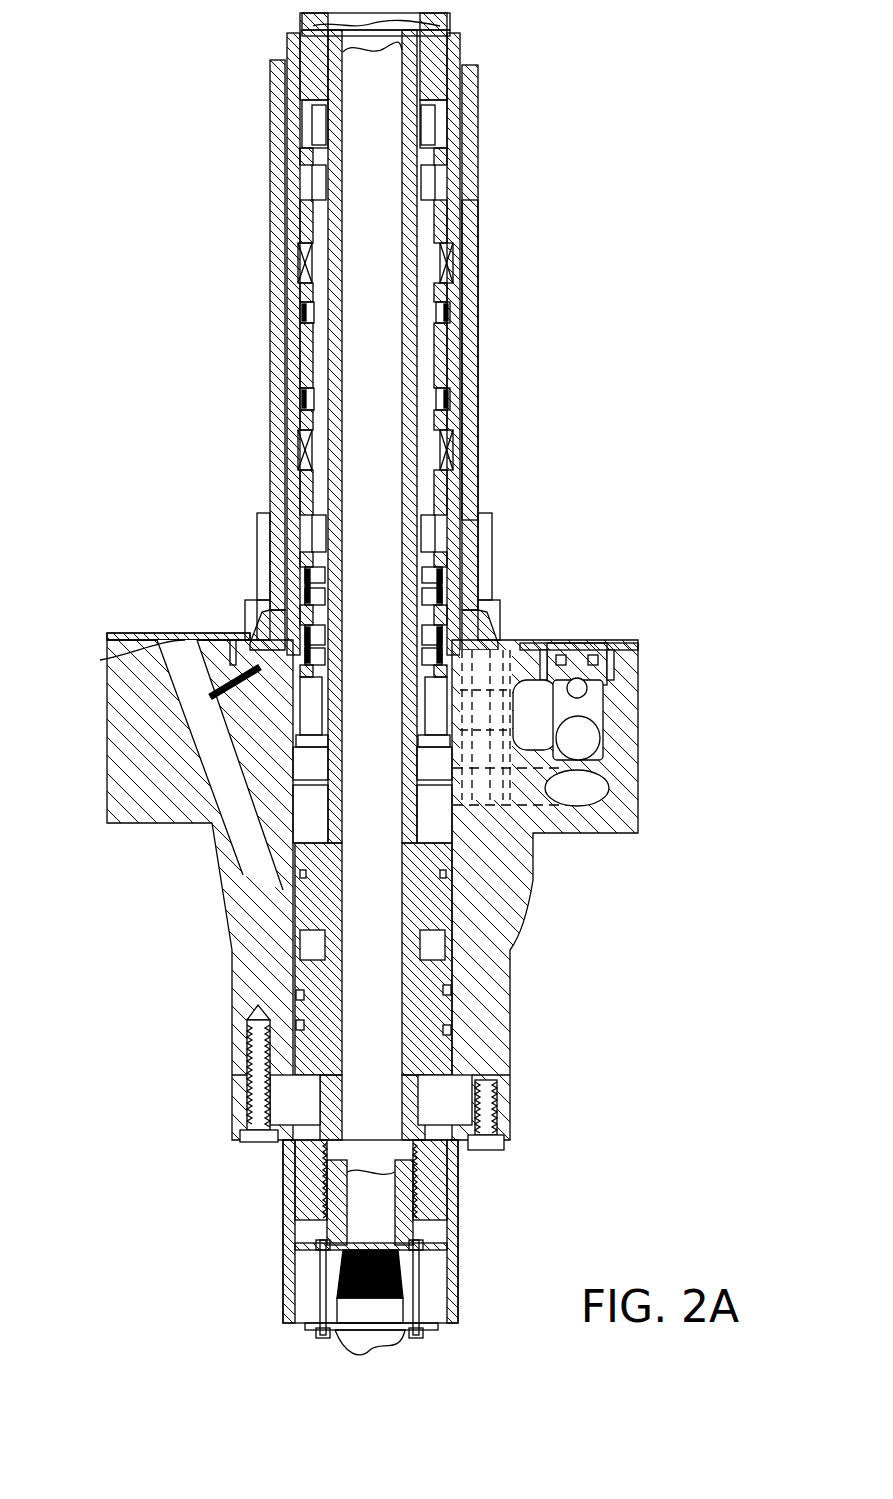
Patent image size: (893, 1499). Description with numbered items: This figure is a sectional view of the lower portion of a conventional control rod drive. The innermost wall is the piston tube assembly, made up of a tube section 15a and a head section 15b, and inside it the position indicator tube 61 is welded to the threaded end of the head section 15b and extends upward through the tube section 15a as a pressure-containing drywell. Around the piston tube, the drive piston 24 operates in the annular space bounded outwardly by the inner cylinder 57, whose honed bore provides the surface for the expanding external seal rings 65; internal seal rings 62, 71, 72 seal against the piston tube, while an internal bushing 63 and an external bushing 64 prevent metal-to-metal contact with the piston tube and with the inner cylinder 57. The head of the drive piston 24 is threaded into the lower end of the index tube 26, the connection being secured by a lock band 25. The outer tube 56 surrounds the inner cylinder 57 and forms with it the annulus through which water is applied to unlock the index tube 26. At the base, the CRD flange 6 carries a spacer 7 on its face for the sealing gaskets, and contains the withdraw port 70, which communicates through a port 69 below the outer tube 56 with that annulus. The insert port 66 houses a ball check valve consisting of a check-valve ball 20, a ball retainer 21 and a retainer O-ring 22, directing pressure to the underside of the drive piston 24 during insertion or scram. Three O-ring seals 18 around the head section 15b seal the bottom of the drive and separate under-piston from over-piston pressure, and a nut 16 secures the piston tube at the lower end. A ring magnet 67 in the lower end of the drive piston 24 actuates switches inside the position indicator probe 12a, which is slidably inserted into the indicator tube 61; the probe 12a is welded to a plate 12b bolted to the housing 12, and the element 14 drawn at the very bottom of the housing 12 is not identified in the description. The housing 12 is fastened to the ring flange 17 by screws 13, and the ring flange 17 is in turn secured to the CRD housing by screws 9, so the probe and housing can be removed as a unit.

The CRD flange 6 is at (105, 773).
The spacer 7 is at (128, 635).
The port 69 is at (168, 640).
The withdraw port 70 is at (185, 680).
The outer tube 56 is at (478, 213).
The inner cylinder 57 is at (465, 345).
The drive piston 24 is at (305, 357).
The lock band 25 is at (460, 72).
The index tube 26 is at (450, 22).
The internal seal ring 62 is at (320, 117).
The internal bushing 63 is at (322, 182).
The external bushing 64 is at (448, 265).
The external seal ring 65 is at (448, 310).
The internal seal ring 72 is at (318, 575).
The internal seal ring 71 is at (318, 630).
The ring magnet 67 is at (305, 692).
The tube section 15a is at (412, 765).
The head section 15b is at (412, 870).
The position indicator tube 61 is at (358, 100).
The retainer O-ring 22 is at (640, 660).
The insert port 66 is at (580, 655).
The ball retainer 21 is at (590, 742).
The check-valve ball 20 is at (640, 790).
The O-ring seals 18 is at (450, 1030).
The ring flange 17 is at (505, 1085).
The screws 9 is at (245, 1145).
The screws 13 is at (490, 1150).
The nut 16 is at (458, 1190).
The position indicator probe 12a is at (380, 1232).
The housing 12 is at (450, 1262).
The nozzle tip 14 is at (395, 1310).
The plate 12b is at (295, 1270).